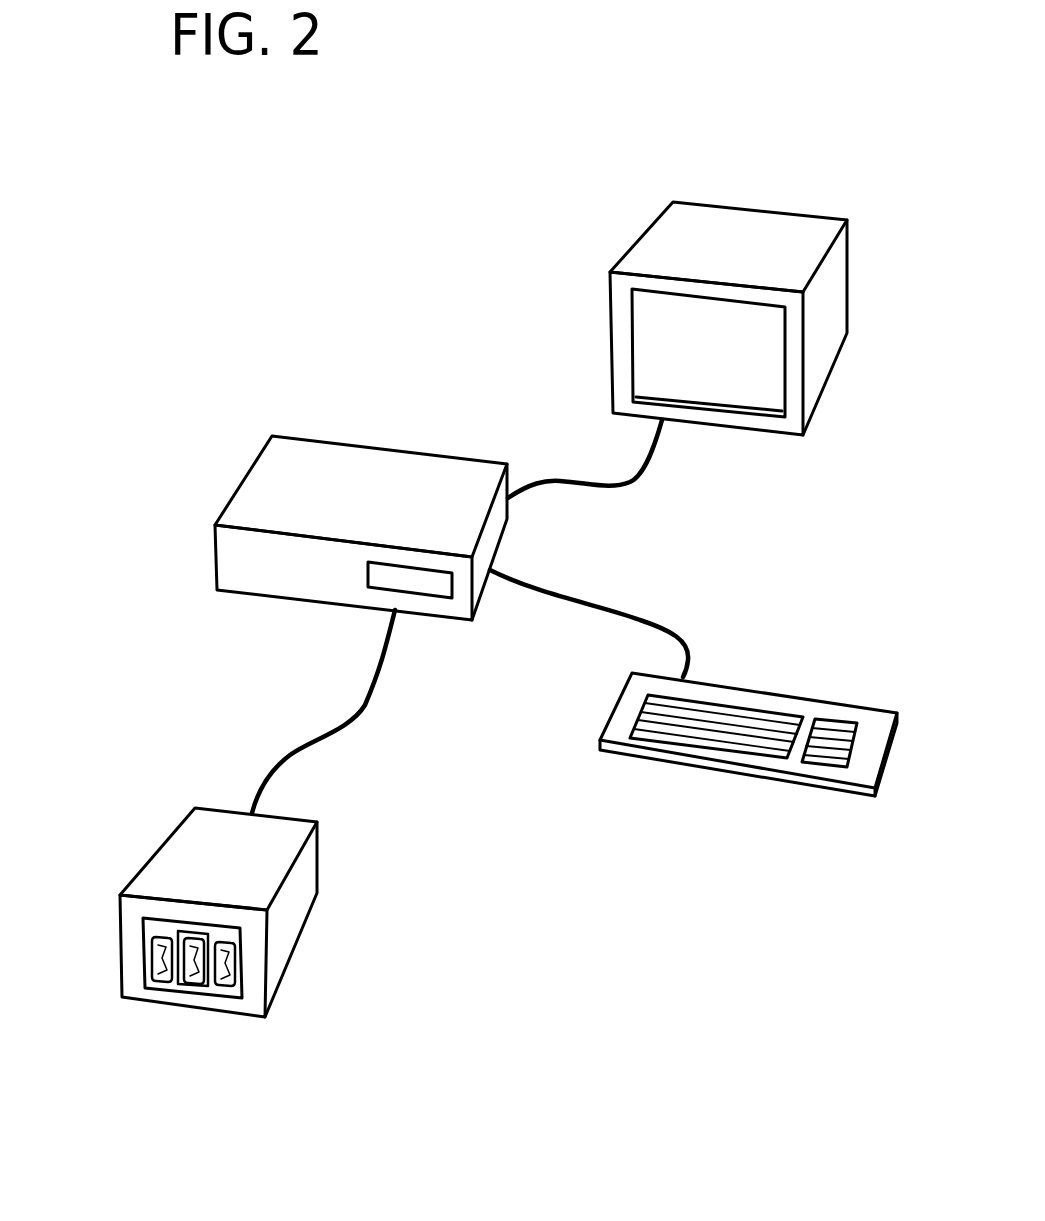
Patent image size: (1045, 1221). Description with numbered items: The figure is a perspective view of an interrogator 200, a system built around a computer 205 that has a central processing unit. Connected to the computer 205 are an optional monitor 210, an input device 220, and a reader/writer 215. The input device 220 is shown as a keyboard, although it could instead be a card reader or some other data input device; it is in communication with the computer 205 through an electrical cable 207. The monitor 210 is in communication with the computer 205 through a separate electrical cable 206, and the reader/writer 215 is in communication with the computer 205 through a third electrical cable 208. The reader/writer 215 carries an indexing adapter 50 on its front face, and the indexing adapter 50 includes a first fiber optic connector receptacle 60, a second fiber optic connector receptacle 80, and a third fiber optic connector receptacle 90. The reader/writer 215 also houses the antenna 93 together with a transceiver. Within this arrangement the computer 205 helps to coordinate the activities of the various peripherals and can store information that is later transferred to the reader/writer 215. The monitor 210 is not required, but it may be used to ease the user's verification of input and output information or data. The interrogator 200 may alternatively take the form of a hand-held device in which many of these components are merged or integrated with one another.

The interrogator 200 is at (408, 200).
The computer 205 is at (392, 448).
The electrical cable 206 is at (643, 480).
The electrical cable 207 is at (613, 610).
The electrical cable 208 is at (358, 710).
The monitor 210 is at (772, 208).
The reader/writer 215 is at (183, 818).
The input device 220 is at (828, 793).
The indexing adapter 50 is at (238, 977).
The first fiber optic connector receptacle 60 is at (153, 970).
The second fiber optic connector receptacle 80 is at (193, 987).
The third fiber optic connector receptacle 90 is at (220, 990).
The antenna 93 is at (190, 933).